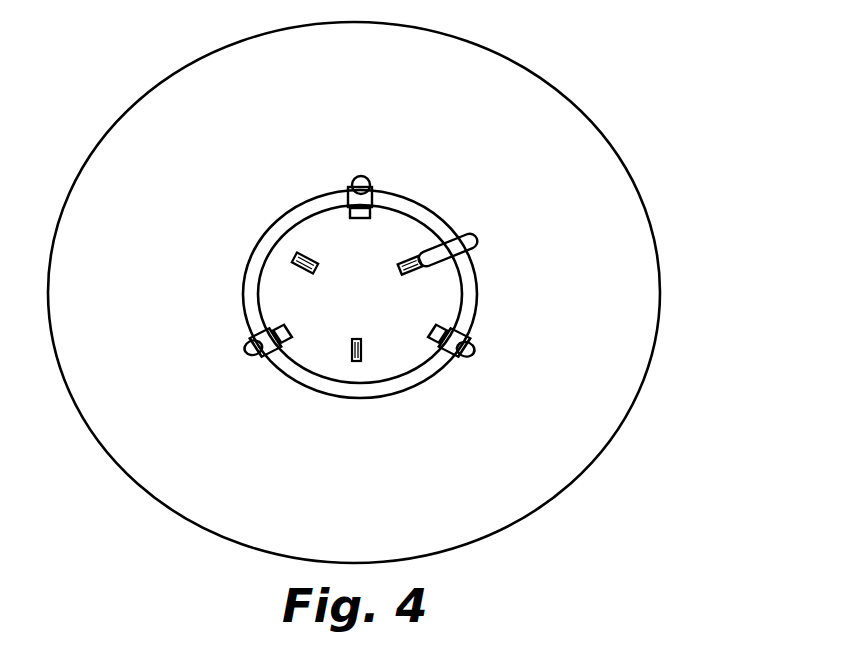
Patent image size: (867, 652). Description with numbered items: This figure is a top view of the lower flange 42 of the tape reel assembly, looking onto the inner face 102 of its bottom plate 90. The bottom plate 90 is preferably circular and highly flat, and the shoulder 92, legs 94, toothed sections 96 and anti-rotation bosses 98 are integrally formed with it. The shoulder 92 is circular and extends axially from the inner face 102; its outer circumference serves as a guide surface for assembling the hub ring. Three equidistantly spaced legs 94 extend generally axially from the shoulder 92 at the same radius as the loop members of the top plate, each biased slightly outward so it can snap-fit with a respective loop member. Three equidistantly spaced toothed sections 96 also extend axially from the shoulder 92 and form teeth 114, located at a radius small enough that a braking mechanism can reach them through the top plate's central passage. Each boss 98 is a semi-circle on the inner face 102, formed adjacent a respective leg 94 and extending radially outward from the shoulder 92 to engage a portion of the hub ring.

The lower flange 42 is at (560, 48).
The bottom plate 90 is at (384, 292).
The shoulder 92 is at (277, 228).
The legs 94 is at (350, 212).
The toothed sections 96 is at (292, 262).
The anti-rotation bosses 98 is at (362, 180).
The inner face 102 is at (605, 163).
The teeth 114 is at (447, 266).